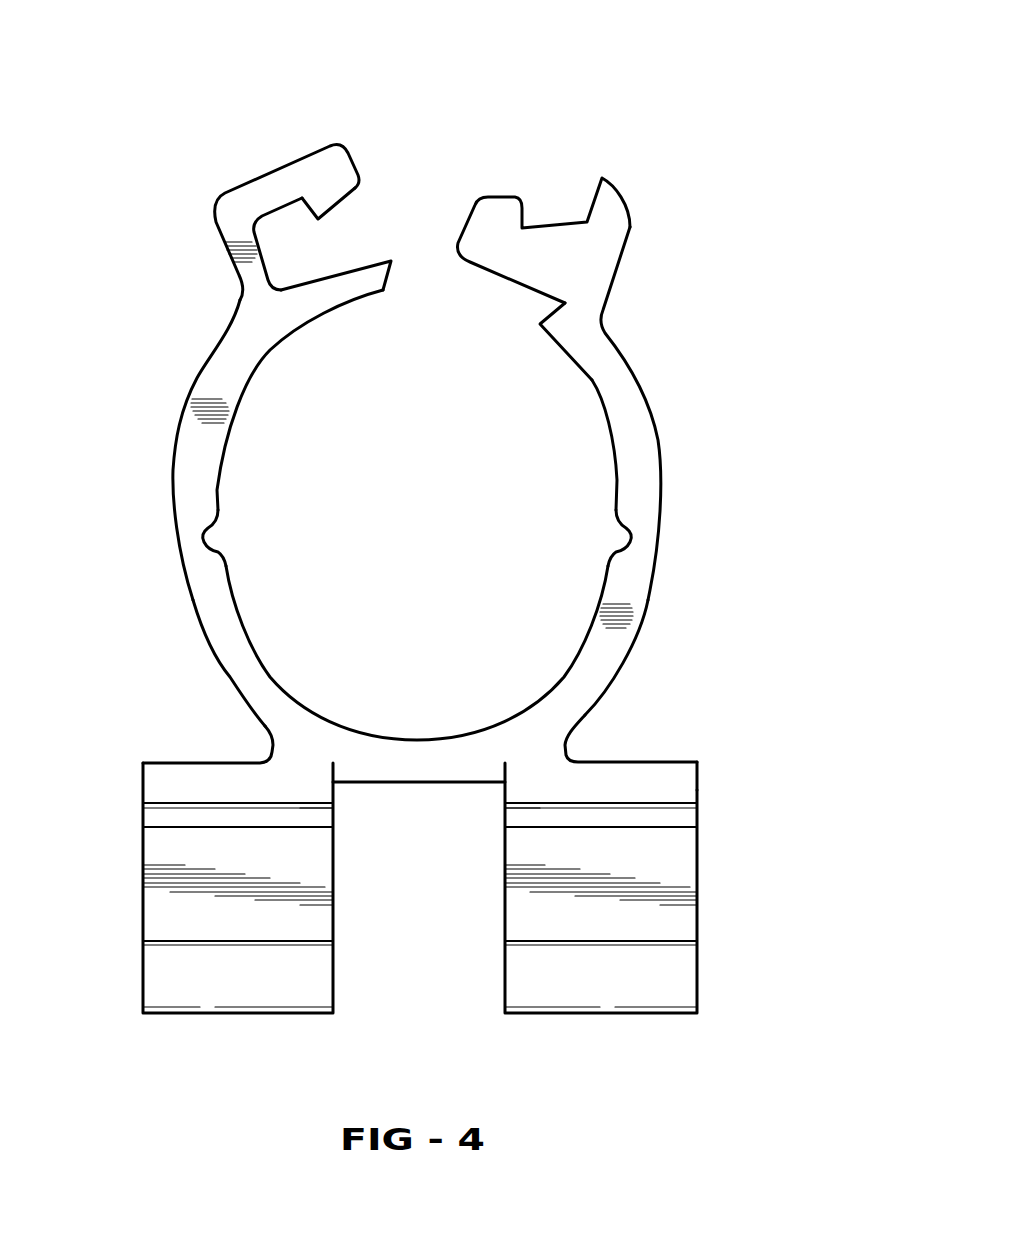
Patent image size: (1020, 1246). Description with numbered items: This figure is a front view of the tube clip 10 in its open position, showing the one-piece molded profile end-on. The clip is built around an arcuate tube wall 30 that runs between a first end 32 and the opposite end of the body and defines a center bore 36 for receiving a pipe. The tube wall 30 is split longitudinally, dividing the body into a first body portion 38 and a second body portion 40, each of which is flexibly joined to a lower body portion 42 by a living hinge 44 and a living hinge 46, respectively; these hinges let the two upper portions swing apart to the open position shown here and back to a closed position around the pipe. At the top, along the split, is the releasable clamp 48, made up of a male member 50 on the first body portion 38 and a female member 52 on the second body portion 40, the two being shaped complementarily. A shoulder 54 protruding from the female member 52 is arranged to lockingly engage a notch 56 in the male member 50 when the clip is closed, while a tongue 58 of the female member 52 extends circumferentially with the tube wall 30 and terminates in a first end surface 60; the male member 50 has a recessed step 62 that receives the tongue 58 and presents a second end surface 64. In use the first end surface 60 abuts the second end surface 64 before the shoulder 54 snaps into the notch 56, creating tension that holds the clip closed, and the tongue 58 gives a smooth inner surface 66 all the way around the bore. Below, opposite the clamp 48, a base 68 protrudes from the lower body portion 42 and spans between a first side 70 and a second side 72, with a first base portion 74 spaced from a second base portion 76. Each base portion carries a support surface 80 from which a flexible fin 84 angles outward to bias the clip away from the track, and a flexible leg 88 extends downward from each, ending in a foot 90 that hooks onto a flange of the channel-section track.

The tube clip 10 is at (810, 300).
The arcuate tube wall 30 is at (648, 600).
The first end 32 is at (210, 630).
The center bore 36 is at (487, 723).
The first body portion 38 is at (637, 370).
The second body portion 40 is at (177, 427).
The lower body portion 42 is at (264, 676).
The living hinge 44 is at (650, 547).
The living hinge 46 is at (185, 543).
The clamp 48 is at (435, 130).
The male member 50 is at (630, 217).
The female member 52 is at (214, 207).
The shoulder 54 is at (330, 185).
The notch 56 is at (530, 215).
The tongue 58 is at (313, 295).
The first end surface 60 is at (394, 278).
The recessed step 62 is at (493, 270).
The second end surface 64 is at (546, 306).
The smooth inner surface 66 is at (236, 378).
The base 68 is at (692, 760).
The first side 70 is at (138, 778).
The second side 72 is at (700, 786).
The first base portion 74 is at (208, 780).
The second base portion 76 is at (607, 783).
The support surface 80 is at (172, 812).
The flexible fin 84 is at (312, 820).
The flexible leg 88 is at (163, 913).
The foot 90 is at (180, 980).